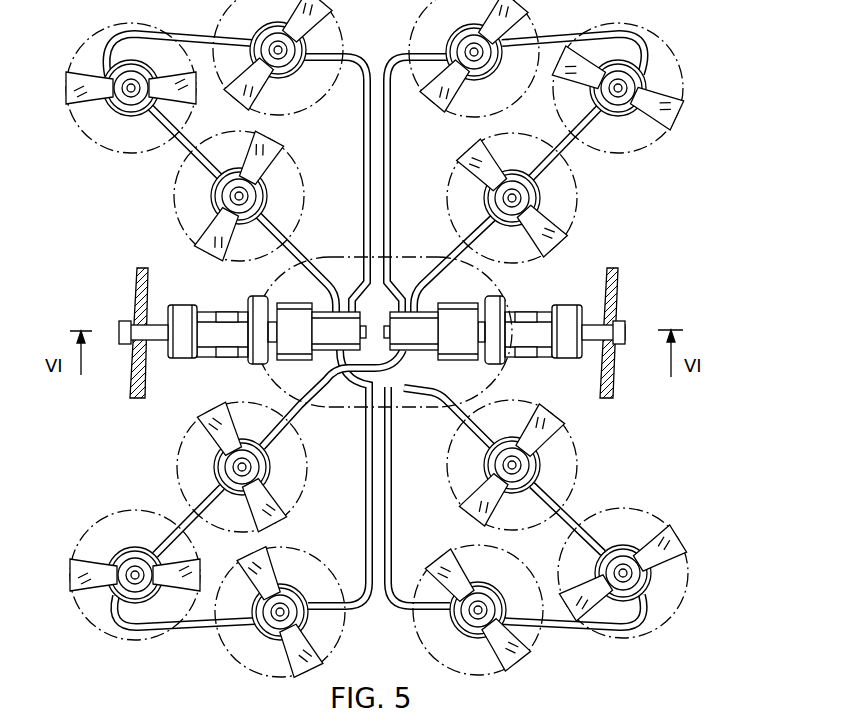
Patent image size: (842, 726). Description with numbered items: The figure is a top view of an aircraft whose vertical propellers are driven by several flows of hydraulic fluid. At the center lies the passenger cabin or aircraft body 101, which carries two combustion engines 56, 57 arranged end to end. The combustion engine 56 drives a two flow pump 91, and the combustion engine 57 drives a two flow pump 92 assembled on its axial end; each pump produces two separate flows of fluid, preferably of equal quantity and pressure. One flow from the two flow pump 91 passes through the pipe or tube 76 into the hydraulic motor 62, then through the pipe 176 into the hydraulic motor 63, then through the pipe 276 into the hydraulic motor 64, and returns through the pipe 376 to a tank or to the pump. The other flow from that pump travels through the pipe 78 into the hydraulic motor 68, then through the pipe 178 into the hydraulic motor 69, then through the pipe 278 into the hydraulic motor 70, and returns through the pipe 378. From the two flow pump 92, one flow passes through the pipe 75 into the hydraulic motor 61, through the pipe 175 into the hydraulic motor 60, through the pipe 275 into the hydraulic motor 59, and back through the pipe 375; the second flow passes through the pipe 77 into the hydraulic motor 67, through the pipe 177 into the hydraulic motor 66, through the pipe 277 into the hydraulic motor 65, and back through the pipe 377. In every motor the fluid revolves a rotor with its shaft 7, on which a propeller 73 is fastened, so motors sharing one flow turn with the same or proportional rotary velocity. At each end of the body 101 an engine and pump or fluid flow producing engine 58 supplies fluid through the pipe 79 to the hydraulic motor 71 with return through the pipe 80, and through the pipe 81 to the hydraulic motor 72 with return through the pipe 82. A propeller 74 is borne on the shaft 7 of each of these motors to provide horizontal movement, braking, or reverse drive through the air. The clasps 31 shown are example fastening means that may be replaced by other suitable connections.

The shaft 7 is at (278, 48).
The clasp 31 is at (376, 72).
The combustion engine 56 is at (296, 310).
The combustion engine 57 is at (455, 310).
The engine and pump or fluid flow producing engine 58 is at (262, 360).
The hydraulic motor 59 is at (540, 196).
The hydraulic motor 60 is at (616, 113).
The hydraulic motor 61 is at (492, 65).
The hydraulic motor 62 is at (296, 72).
The hydraulic motor 63 is at (124, 112).
The hydraulic motor 64 is at (262, 195).
The hydraulic motor 65 is at (262, 470).
The hydraulic motor 66 is at (155, 592).
The hydraulic motor 67 is at (275, 640).
The hydraulic motor 68 is at (496, 590).
The hydraulic motor 69 is at (645, 582).
The hydraulic motor 70 is at (537, 467).
The hydraulic motor 71 is at (183, 358).
The hydraulic motor 72 is at (566, 358).
The propeller 73 is at (78, 86).
The propeller 74 is at (137, 293).
The pipe or tube 75 is at (390, 152).
The pipe or tube 76 is at (363, 152).
The pipe or tube 77 is at (364, 483).
The pipe or tube 78 is at (390, 483).
The pipe or tube 79 is at (228, 356).
The pipe or tube 80 is at (232, 300).
The pipe or tube 81 is at (533, 305).
The pipe or tube 82 is at (528, 356).
The two flow pump 91 is at (322, 352).
The two flow pump 92 is at (428, 345).
The aircraft body 101 is at (508, 284).
The pipe or tube 175 is at (617, 15).
The pipe or tube 176 is at (168, 38).
The pipe or tube 177 is at (193, 630).
The pipe or tube 178 is at (562, 630).
The pipe or tube 275 is at (565, 157).
The pipe or tube 276 is at (182, 152).
The pipe or tube 277 is at (188, 512).
The pipe or tube 278 is at (565, 513).
The pipe or tube 375 is at (466, 243).
The pipe or tube 376 is at (300, 258).
The pipe or tube 377 is at (302, 410).
The pipe or tube 378 is at (458, 410).